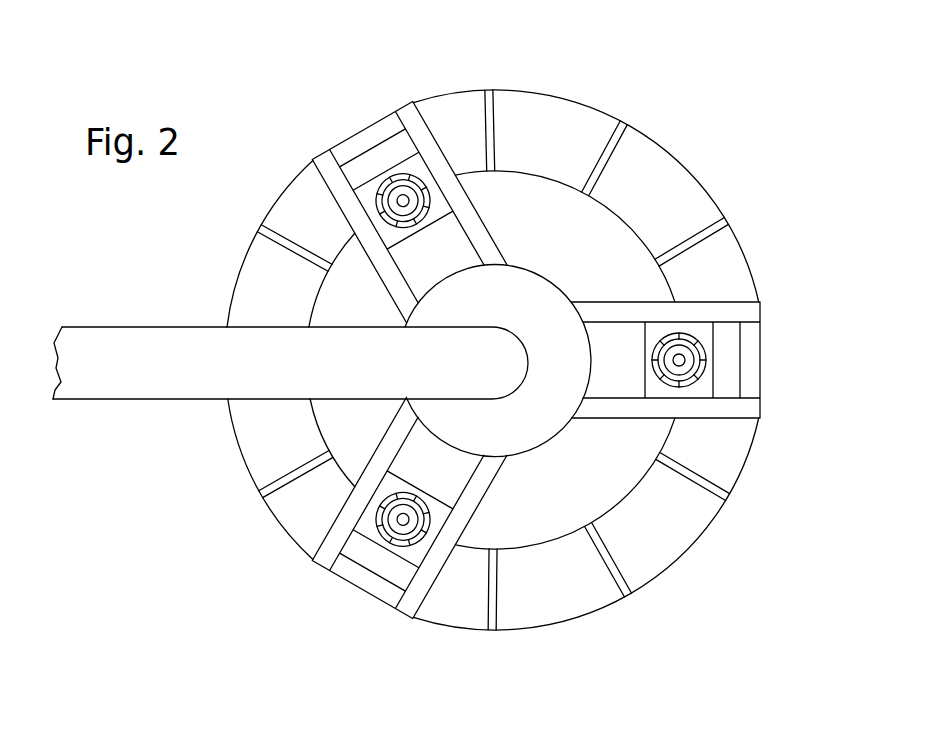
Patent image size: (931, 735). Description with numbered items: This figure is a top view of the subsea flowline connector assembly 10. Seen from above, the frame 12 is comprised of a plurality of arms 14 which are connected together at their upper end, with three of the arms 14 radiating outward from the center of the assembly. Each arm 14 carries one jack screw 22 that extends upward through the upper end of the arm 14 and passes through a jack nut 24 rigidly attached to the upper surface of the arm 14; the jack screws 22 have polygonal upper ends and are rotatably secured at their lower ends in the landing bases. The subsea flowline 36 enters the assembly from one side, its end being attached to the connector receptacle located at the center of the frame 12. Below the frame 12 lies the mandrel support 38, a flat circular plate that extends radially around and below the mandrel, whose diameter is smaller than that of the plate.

The subsea flowline connector assembly 10 is at (676, 80).
The frame 12 is at (500, 260).
The arm 14 is at (412, 130).
The jack screw 22 is at (706, 355).
The jack nut 24 is at (690, 337).
The subsea flowline 36 is at (192, 382).
The mandrel support 38 is at (560, 540).